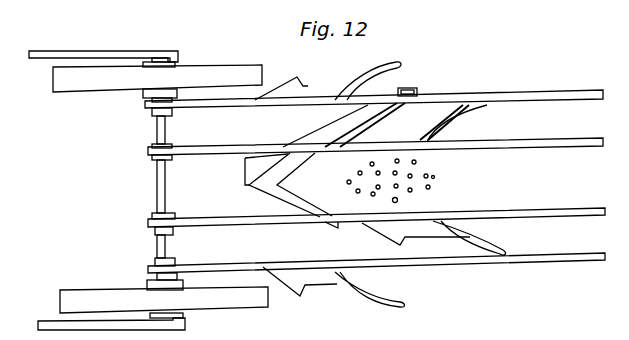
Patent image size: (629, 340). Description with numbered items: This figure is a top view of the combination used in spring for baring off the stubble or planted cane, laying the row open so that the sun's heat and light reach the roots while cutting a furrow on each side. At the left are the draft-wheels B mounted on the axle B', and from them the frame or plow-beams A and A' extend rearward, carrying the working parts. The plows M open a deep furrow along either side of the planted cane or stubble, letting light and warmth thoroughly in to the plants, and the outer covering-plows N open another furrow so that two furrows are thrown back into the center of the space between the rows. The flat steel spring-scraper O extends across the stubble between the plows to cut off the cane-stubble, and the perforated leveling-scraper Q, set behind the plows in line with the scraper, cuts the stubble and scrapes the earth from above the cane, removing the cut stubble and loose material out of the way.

The draft-wheels B is at (148, 190).
The axle B' is at (168, 194).
The plow-beam A' is at (375, 172).
The plow-beam A is at (376, 174).
The covering-plows N is at (371, 102).
The scraper O is at (344, 125).
The opening-plows M is at (397, 112).
The leveling-scraper Q is at (340, 185).